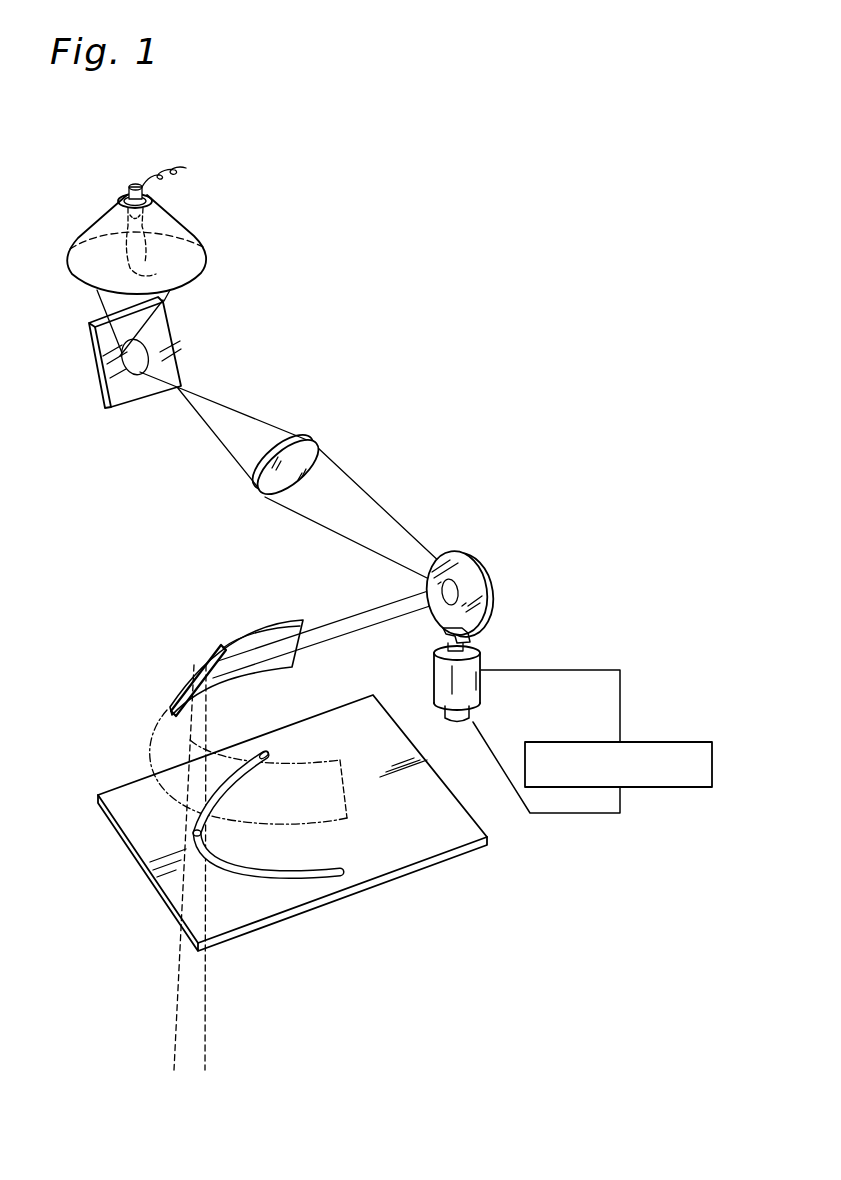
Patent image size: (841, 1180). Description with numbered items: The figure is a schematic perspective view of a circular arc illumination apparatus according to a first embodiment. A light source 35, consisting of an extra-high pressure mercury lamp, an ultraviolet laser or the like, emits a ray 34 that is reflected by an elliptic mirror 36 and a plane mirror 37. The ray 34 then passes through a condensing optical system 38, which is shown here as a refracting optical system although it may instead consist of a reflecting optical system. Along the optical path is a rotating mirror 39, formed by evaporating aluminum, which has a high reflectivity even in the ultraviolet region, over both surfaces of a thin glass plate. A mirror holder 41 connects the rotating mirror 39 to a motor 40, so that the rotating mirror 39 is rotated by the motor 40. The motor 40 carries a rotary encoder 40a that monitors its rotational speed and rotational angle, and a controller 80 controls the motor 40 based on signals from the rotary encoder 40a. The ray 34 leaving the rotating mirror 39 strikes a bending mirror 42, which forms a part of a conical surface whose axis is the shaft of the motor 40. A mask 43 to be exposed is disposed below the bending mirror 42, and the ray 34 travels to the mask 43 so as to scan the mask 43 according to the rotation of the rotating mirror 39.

The ray 34 is at (252, 428).
The light source 35 is at (125, 194).
The elliptic mirror 36 is at (172, 226).
The plane mirror 37 is at (145, 360).
The condensing optical system 38 is at (307, 439).
The rotating mirror 39 is at (493, 583).
The motor 40 is at (482, 694).
The rotary encoder 40a is at (443, 715).
The mirror holder 41 is at (473, 640).
The bending mirror 42 is at (240, 633).
The mask 43 is at (370, 868).
The controller 80 is at (658, 741).